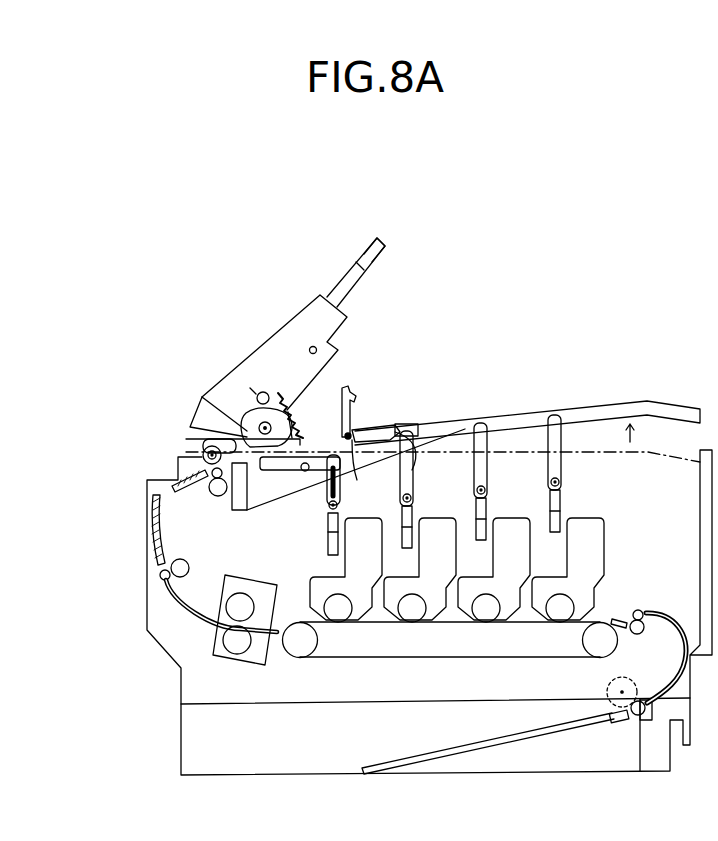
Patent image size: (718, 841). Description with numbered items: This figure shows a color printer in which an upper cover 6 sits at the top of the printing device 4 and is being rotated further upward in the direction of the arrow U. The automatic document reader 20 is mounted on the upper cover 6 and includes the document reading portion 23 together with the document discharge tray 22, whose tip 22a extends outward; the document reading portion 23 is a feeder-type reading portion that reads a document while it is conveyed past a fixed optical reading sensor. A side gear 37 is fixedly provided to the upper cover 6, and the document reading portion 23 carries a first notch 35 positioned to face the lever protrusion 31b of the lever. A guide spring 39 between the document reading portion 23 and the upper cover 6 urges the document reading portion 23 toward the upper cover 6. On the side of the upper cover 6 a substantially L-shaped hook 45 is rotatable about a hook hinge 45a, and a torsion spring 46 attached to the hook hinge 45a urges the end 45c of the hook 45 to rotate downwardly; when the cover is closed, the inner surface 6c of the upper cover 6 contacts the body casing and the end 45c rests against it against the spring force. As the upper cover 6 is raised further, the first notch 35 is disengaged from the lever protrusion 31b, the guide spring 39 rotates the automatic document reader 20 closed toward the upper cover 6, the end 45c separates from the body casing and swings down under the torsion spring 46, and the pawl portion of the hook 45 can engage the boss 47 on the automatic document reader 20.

The printing device 4 is at (138, 557).
The upper cover 6 is at (527, 412).
The inner surface of the upper cover 6c is at (406, 423).
The automatic document reader 20 is at (296, 320).
The document discharge tray 22 is at (373, 250).
The tip of the document discharge tray 22a is at (382, 243).
The document reading portion 23 is at (310, 313).
The boss 47 is at (312, 347).
The side gear 37 is at (255, 417).
The guide spring 39 is at (297, 420).
The hook 45 is at (348, 388).
The torsion spring 46 is at (360, 396).
The hook hinge 45a is at (341, 492).
The end of the hook 45c is at (400, 450).
The first notch 35 is at (241, 510).
The lever protrusion 31b is at (263, 450).